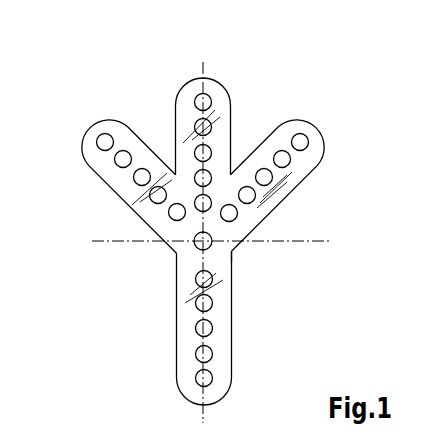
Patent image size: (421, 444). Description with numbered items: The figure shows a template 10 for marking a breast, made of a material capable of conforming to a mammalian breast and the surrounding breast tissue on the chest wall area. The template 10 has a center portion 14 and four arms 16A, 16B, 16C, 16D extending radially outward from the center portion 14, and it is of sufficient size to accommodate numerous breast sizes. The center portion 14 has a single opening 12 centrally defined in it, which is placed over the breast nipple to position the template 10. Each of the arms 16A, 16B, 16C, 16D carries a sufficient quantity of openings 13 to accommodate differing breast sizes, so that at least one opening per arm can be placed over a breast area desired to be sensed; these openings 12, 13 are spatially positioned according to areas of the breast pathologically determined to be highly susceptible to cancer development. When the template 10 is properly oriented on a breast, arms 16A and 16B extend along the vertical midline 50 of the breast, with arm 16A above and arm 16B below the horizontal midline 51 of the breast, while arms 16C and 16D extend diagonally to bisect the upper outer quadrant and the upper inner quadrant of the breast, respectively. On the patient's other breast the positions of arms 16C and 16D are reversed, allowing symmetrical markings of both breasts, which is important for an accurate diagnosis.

The template 10 is at (312, 282).
The opening 12 is at (197, 247).
The openings 13 is at (211, 99).
The center portion 14 is at (232, 255).
The arm 16A is at (178, 91).
The arm 16B is at (177, 336).
The arm 16C is at (89, 134).
The arm 16D is at (317, 165).
The vertical midline 50 is at (202, 62).
The horizontal midline 51 is at (92, 242).